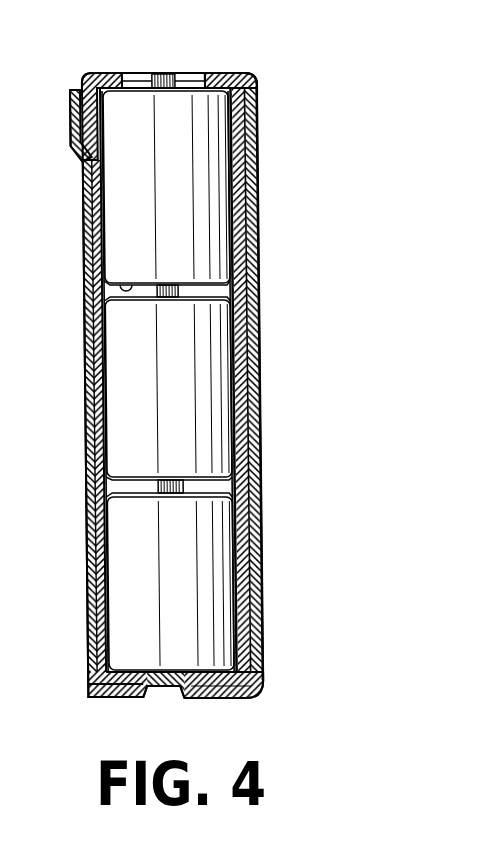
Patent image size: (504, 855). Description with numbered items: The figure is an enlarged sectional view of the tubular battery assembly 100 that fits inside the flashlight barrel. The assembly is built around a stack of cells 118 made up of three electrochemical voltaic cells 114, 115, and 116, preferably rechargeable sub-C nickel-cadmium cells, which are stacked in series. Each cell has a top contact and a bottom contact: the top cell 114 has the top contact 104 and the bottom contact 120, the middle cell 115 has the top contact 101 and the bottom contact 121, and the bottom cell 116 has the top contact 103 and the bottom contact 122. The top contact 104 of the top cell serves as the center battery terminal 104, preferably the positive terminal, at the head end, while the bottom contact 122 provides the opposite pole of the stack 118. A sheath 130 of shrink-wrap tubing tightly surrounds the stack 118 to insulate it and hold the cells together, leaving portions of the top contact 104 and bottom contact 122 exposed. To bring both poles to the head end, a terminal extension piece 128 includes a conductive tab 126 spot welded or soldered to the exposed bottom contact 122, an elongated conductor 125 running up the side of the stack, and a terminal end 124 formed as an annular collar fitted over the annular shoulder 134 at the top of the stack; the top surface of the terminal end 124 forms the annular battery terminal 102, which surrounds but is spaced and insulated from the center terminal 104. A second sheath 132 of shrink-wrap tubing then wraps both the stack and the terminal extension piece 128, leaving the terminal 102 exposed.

The battery assembly 100 is at (69, 69).
The top contact 101 is at (170, 298).
The annular battery terminal 102 is at (99, 74).
The top contact 103 is at (172, 495).
The center battery terminal 104 is at (178, 73).
The top cell 114 is at (120, 207).
The cell 115 is at (123, 390).
The cell 116 is at (123, 562).
The stack of cells 118 is at (185, 404).
The bottom contact 120 is at (122, 284).
The bottom contact 121 is at (168, 381).
The bottom contact 122 is at (190, 672).
The terminal end 124 is at (247, 82).
The elongated conductor 125 is at (248, 302).
The conductive tab 126 is at (162, 684).
The terminal extension piece 128 is at (292, 250).
The sheath 130 is at (105, 686).
The second sheath 132 is at (127, 696).
The annular shoulder 134 is at (82, 142).